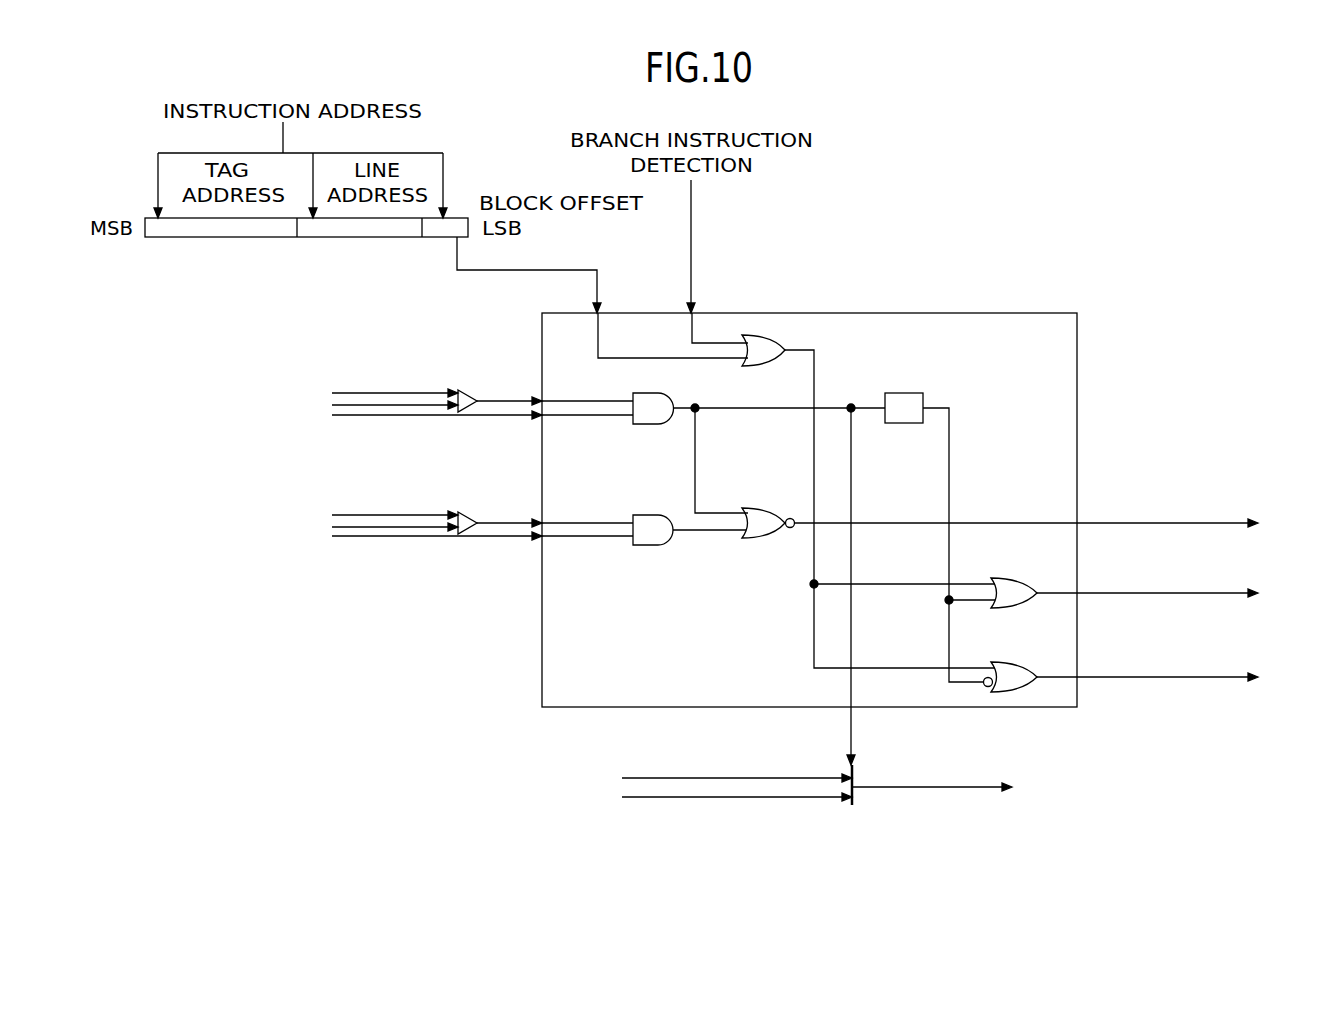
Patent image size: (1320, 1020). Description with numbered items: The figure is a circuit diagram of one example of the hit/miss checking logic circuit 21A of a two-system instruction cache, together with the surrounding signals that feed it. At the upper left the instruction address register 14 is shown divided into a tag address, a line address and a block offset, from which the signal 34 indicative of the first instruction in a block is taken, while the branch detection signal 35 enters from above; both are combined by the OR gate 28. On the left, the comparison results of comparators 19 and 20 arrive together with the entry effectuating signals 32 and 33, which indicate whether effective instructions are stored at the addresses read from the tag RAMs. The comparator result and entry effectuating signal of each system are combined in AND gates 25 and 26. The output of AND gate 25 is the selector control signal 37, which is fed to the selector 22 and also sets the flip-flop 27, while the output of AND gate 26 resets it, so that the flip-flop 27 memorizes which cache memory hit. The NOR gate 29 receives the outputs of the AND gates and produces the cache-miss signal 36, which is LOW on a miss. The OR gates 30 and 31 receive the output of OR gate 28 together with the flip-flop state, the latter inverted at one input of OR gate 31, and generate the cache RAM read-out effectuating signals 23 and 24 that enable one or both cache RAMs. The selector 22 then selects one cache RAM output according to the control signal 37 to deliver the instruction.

The instruction address register 14 is at (168, 239).
The comparator 19 is at (462, 390).
The comparator 20 is at (466, 512).
The hit/miss checking logic circuit 21A is at (1077, 342).
The selector 22 is at (855, 773).
The cache RAM read-out effectuating signal 23 is at (1147, 594).
The cache RAM read-out effectuating signal 24 is at (1147, 678).
The AND gate 25 is at (672, 393).
The AND gate 26 is at (645, 545).
The flip-flop 27 is at (912, 393).
The OR gate 28 is at (772, 334).
The NOR gate 29 is at (755, 508).
The OR gate 30 is at (1018, 578).
The OR gate 31 is at (1020, 662).
The entry effectuating signal 32 is at (375, 416).
The entry effectuating signal 33 is at (375, 537).
The signal indicative of the first instruction in the block 34 is at (556, 270).
The branch detection signal 35 is at (692, 240).
The cache-miss signal 36 is at (1147, 524).
The selector control signal 37 is at (851, 722).